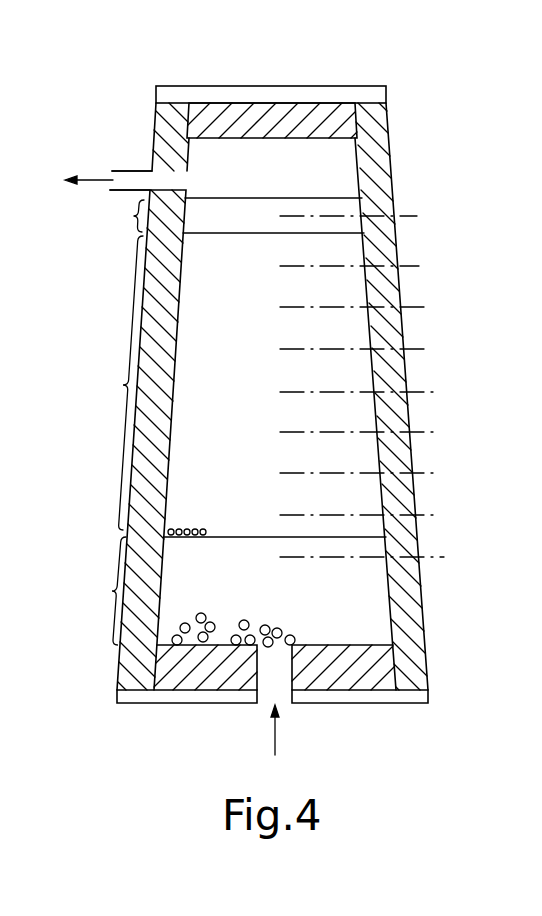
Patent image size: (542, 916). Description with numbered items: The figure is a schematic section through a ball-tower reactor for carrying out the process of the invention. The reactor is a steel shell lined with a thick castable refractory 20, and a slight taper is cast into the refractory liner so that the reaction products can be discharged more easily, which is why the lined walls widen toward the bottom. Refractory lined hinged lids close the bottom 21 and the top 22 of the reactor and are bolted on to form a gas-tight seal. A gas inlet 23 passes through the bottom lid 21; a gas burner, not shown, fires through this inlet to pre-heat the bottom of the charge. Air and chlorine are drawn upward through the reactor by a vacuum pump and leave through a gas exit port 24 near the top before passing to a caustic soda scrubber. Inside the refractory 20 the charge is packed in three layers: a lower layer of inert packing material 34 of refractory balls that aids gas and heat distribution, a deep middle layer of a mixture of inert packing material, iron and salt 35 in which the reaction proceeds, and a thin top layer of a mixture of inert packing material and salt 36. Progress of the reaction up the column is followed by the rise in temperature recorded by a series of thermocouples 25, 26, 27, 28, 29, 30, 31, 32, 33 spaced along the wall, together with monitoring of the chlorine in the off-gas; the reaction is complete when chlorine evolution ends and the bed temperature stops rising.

The castable refractory lining 20 is at (372, 148).
The bottom lid 21 is at (355, 668).
The top lid 22 is at (285, 115).
The gas inlet 23 is at (278, 748).
The gas exit port 24 is at (92, 181).
The thermocouple 25 is at (379, 557).
The thermocouple 26 is at (377, 515).
The thermocouple 27 is at (376, 473).
The thermocouple 28 is at (376, 432).
The thermocouple 29 is at (374, 392).
The thermocouple 30 is at (372, 349).
The thermocouple 31 is at (370, 307).
The thermocouple 32 is at (367, 266).
The thermocouple 33 is at (366, 216).
The layer of inert packing material 34 is at (98, 591).
The layer of a mixture of inert packing material, iron and salt 35 is at (112, 383).
The layer of a mixture of inert packing material and salt 36 is at (122, 216).